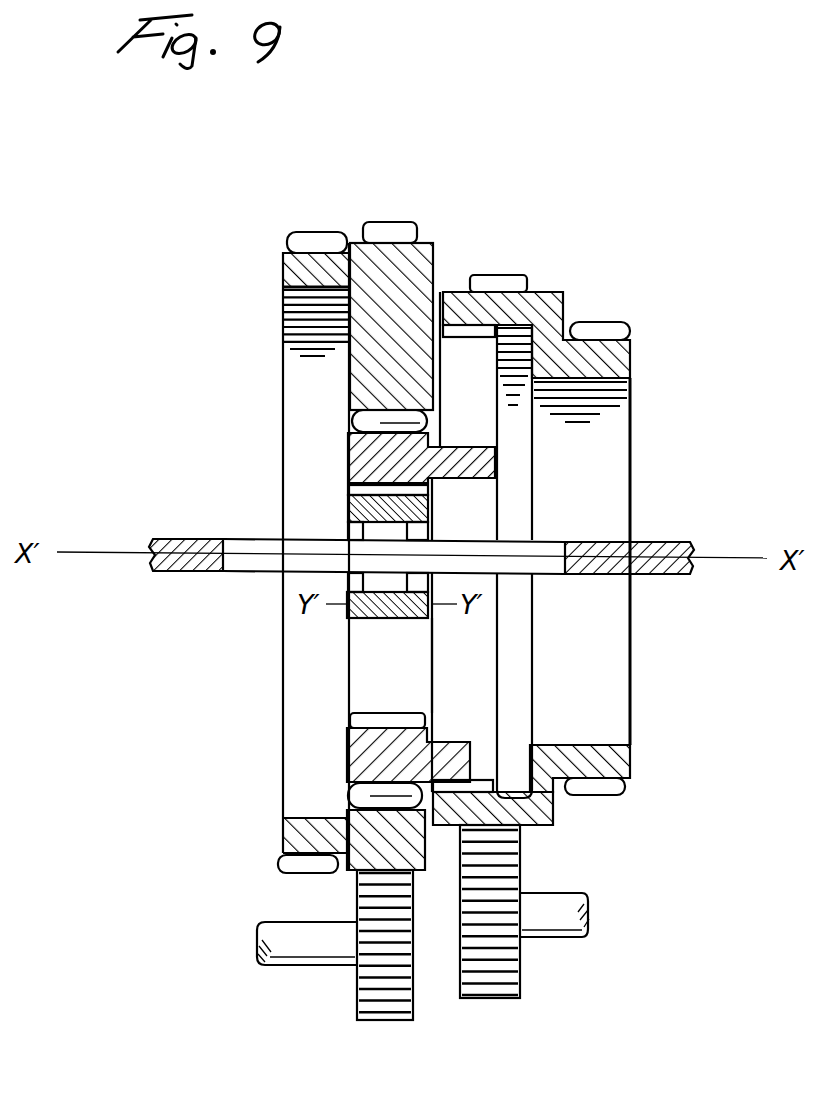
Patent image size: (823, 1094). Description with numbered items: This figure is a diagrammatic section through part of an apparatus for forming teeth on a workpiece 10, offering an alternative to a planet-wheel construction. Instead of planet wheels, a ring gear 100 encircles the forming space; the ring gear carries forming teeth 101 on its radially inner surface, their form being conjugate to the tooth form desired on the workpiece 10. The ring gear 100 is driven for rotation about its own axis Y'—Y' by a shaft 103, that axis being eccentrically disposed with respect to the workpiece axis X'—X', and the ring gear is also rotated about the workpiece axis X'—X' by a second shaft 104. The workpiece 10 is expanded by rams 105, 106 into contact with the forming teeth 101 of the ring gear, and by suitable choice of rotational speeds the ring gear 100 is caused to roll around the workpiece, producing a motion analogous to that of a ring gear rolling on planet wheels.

The workpiece 10 is at (370, 506).
The ring gear 100 is at (372, 458).
The forming teeth 101 is at (356, 489).
The shaft 103 is at (556, 296).
The shaft 104 is at (283, 340).
The ram 105 is at (195, 572).
The ram 106 is at (657, 543).